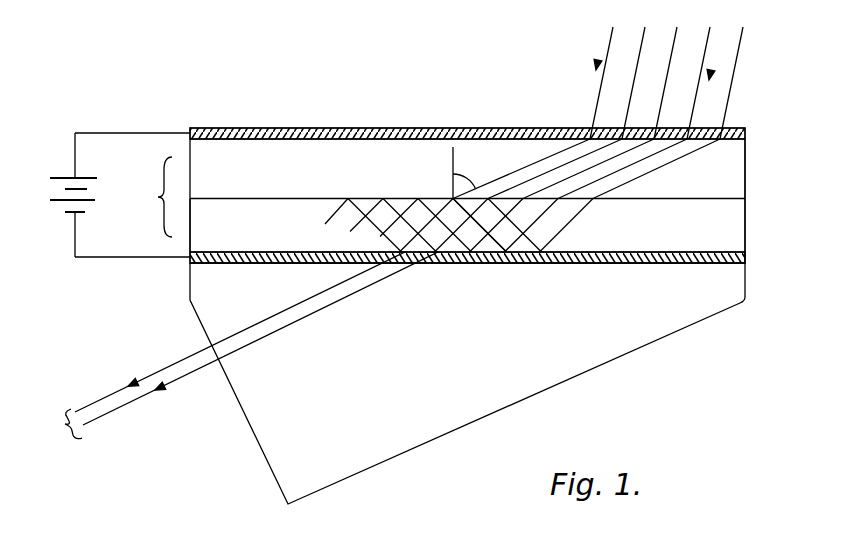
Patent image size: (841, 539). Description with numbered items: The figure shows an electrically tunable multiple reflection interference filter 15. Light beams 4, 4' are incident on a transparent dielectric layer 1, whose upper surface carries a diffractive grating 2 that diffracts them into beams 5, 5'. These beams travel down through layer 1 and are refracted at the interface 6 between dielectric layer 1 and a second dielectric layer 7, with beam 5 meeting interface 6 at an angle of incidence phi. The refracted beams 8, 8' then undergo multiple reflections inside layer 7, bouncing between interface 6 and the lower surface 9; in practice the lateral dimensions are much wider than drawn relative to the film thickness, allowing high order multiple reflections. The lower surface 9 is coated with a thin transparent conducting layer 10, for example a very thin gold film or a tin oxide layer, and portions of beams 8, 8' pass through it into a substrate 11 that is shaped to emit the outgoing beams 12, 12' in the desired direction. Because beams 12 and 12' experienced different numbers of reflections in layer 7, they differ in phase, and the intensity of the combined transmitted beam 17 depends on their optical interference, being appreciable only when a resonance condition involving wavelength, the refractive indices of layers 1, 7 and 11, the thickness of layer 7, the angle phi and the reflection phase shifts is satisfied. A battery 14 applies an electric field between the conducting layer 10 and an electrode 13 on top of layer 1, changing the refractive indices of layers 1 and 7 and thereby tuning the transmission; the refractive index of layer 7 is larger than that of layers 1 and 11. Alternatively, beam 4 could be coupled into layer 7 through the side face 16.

The transparent dielectric layer 1 is at (238, 170).
The diffractive grating 2 is at (749, 133).
The incident light beam 4 is at (643, 83).
The incident light beam 4' is at (736, 83).
The diffracted beam 5 is at (570, 169).
The diffracted beam 5' is at (656, 169).
The interface 6 is at (397, 194).
The dielectric layer 7 is at (267, 228).
The refracted beam 8 is at (456, 226).
The refracted beam 8' is at (572, 226).
The lower surface 9 is at (284, 266).
The thin transparent conducting layer 10 is at (748, 262).
The substrate 11 is at (412, 360).
The outgoing beam 12 is at (240, 332).
The outgoing beam 12' is at (260, 338).
The electrode 13 is at (346, 127).
The battery 14 is at (54, 195).
The electrically tunable filter 15 is at (132, 195).
The side face 16 is at (748, 224).
The outgoing beam 17 is at (57, 430).